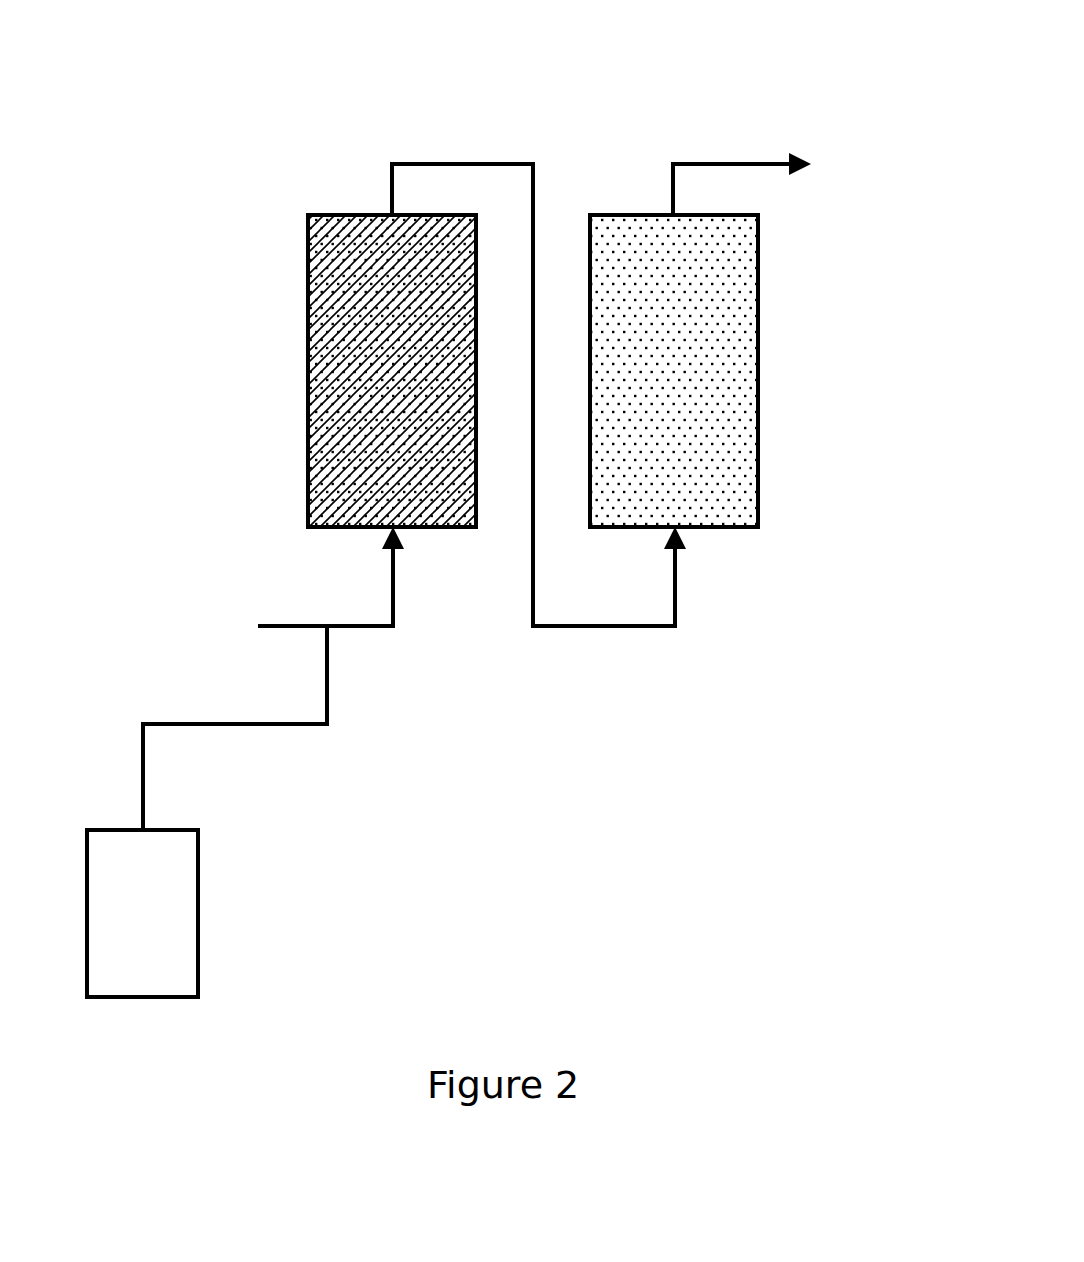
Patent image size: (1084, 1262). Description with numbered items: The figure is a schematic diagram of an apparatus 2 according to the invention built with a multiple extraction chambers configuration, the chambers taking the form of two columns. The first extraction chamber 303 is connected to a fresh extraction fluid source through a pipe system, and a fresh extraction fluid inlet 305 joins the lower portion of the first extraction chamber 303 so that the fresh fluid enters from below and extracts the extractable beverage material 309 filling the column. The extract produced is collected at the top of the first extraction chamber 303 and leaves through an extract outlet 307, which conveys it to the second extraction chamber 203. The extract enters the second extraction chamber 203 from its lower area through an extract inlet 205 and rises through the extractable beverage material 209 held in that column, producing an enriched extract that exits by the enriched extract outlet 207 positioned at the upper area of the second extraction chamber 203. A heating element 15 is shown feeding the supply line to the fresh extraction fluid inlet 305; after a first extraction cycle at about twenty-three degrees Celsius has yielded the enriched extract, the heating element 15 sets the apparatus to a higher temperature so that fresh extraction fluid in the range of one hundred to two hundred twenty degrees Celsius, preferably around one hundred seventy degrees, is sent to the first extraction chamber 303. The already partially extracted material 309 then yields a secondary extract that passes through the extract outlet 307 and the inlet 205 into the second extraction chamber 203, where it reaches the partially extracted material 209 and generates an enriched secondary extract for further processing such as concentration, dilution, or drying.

The apparatus 2 is at (849, 104).
The heating element 15 is at (168, 928).
The first extraction chamber 303 is at (308, 435).
The extractable beverage material 309 is at (333, 290).
The fresh extraction fluid inlet 305 is at (361, 630).
The extract outlet 307 is at (462, 162).
The second extraction chamber 203 is at (758, 435).
The extractable beverage material 209 is at (735, 290).
The extract inlet 205 is at (643, 630).
The enriched extract outlet 207 is at (742, 162).